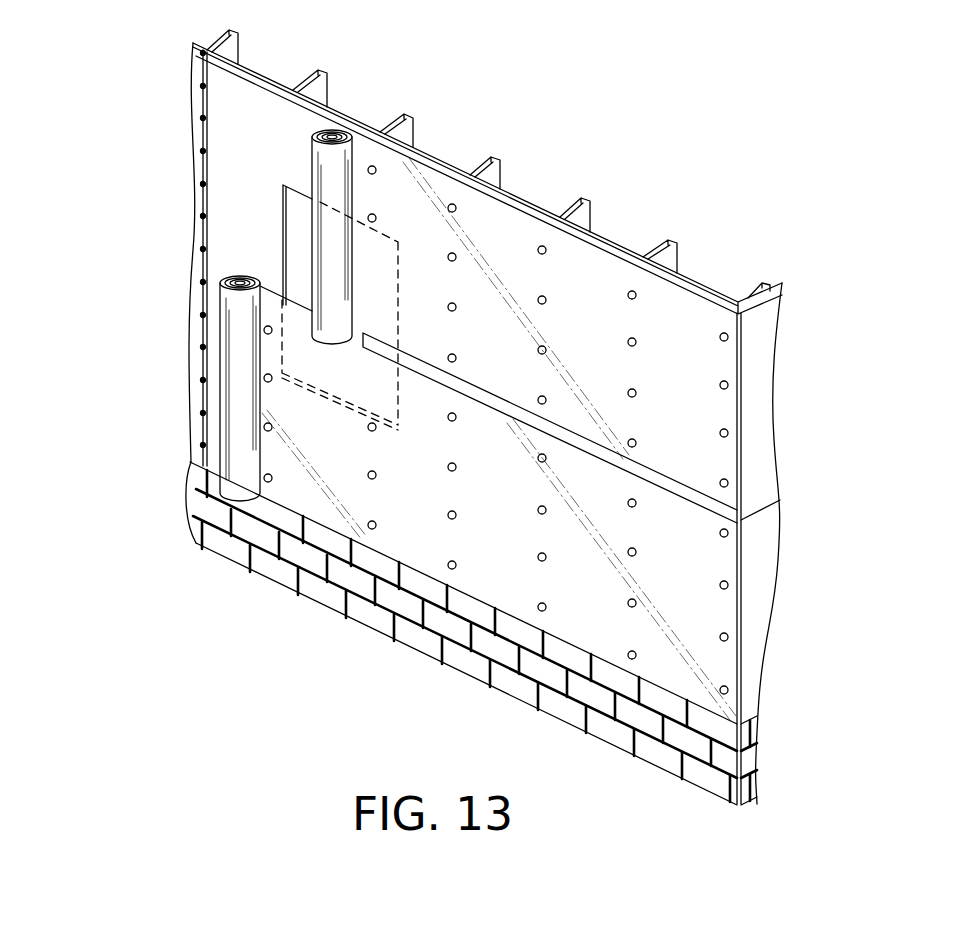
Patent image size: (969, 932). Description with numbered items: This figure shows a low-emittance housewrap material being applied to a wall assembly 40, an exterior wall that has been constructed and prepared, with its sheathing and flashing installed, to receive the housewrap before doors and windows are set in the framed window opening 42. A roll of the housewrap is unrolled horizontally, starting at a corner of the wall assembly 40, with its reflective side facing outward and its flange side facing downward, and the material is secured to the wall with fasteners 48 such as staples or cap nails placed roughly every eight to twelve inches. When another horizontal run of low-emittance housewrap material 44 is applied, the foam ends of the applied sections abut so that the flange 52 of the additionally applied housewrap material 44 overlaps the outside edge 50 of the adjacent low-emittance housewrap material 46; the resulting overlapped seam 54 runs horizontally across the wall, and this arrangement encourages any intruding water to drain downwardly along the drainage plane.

The wall assembly 40 is at (148, 152).
The window opening 42 is at (290, 205).
The low-emittance housewrap material 44 is at (692, 322).
The adjacent low-emittance housewrap material 46 is at (703, 622).
The fasteners 48 is at (723, 338).
The outside edge 50 is at (272, 284).
The flange 52 is at (355, 334).
The seam tape 54 is at (487, 405).